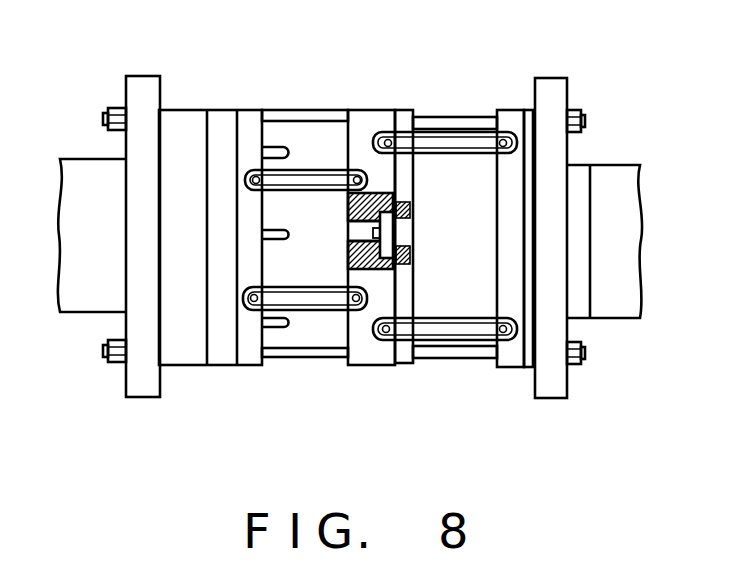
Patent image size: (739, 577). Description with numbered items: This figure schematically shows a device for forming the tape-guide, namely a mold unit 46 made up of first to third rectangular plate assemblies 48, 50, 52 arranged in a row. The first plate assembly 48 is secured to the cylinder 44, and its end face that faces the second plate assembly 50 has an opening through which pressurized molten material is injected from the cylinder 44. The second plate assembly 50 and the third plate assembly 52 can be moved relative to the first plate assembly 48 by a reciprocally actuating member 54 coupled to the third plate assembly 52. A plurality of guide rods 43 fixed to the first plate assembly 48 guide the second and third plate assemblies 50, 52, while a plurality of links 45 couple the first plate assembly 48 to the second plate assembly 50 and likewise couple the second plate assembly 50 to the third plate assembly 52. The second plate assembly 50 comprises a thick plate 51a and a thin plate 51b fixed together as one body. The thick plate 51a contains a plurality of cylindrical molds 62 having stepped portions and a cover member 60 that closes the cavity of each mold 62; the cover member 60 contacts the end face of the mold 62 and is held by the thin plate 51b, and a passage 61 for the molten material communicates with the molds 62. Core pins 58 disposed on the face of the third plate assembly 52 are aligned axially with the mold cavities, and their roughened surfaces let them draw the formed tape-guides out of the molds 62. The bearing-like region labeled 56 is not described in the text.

The guide rods 43 is at (325, 115).
The cylinder 44 is at (612, 170).
The links 45 is at (460, 132).
The mold unit 46 is at (462, 35).
The first plate assembly 48 is at (554, 66).
The second plate assembly 50 is at (396, 82).
The thick plate 51a is at (357, 355).
The thin plate 51b is at (402, 358).
The third plate assembly 52 is at (224, 74).
The reciprocally actuating member 54 is at (77, 175).
The bearing assembly 56 is at (333, 219).
The core pins 58 is at (273, 147).
The cover member 60 is at (386, 236).
The passage 61 is at (413, 224).
The cylindrical molds 62 is at (372, 196).